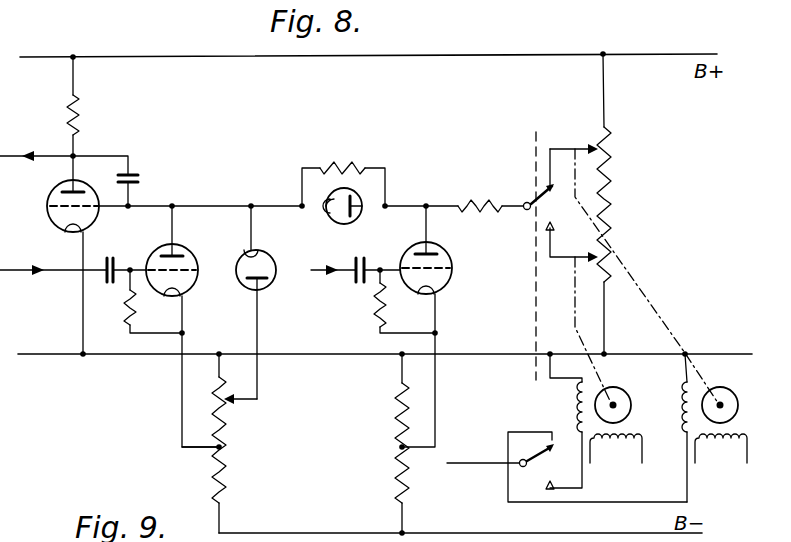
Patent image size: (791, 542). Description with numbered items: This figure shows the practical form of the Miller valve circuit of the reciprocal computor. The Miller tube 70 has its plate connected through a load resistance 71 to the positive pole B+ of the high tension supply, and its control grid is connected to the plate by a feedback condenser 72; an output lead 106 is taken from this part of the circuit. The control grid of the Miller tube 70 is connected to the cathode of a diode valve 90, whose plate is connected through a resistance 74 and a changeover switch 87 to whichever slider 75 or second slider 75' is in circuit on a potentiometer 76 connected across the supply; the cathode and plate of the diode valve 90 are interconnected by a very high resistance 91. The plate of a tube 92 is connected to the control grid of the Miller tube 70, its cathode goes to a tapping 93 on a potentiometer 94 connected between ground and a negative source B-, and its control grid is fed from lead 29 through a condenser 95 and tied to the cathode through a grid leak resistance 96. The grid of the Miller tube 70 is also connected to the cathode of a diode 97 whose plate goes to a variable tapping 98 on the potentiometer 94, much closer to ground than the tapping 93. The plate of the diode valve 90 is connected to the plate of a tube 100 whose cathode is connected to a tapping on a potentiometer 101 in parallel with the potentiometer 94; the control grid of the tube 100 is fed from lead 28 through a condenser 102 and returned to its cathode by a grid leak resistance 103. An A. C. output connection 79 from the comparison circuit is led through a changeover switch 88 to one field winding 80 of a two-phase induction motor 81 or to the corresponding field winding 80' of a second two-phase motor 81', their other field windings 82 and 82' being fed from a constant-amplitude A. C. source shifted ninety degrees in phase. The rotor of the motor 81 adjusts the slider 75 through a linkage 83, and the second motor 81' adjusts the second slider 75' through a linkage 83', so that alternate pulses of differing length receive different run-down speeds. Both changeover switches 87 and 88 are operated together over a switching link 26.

The Miller tube 70 is at (47, 214).
The load resistance 71 is at (80, 120).
The feedback condenser 72 is at (138, 178).
The output lead 106 is at (36, 157).
The lead 29 is at (60, 270).
The condenser 95 is at (124, 258).
The grid leak resistance 96 is at (128, 304).
The tube 92 is at (192, 260).
The diode 97 is at (238, 282).
The very high resistance 91 is at (352, 162).
The diode valve 90 is at (352, 222).
The lead 28 is at (344, 270).
The condenser 102 is at (359, 284).
The grid leak resistance 103 is at (376, 322).
The tube 100 is at (450, 268).
The resistance 74 is at (476, 204).
The changeover switch 87 is at (540, 198).
The second slider 75' is at (574, 134).
The slider 75 is at (572, 242).
The potentiometer 76 is at (612, 196).
The switching link 26 is at (534, 132).
The linkage 83 is at (577, 330).
The linkage 83' is at (646, 276).
The field winding 80 is at (564, 421).
The two-phase induction motor 81 is at (621, 392).
The field winding 80' is at (667, 428).
The second two-phase motor 81' is at (732, 394).
The field winding 82 is at (630, 452).
The field winding 82' is at (725, 462).
The changeover switch 88 is at (542, 456).
The A. C. output connection 79 is at (483, 452).
The tapping 93 is at (200, 448).
The potentiometer 94 is at (226, 448).
The variable tapping 98 is at (246, 404).
The potentiometer 101 is at (396, 422).